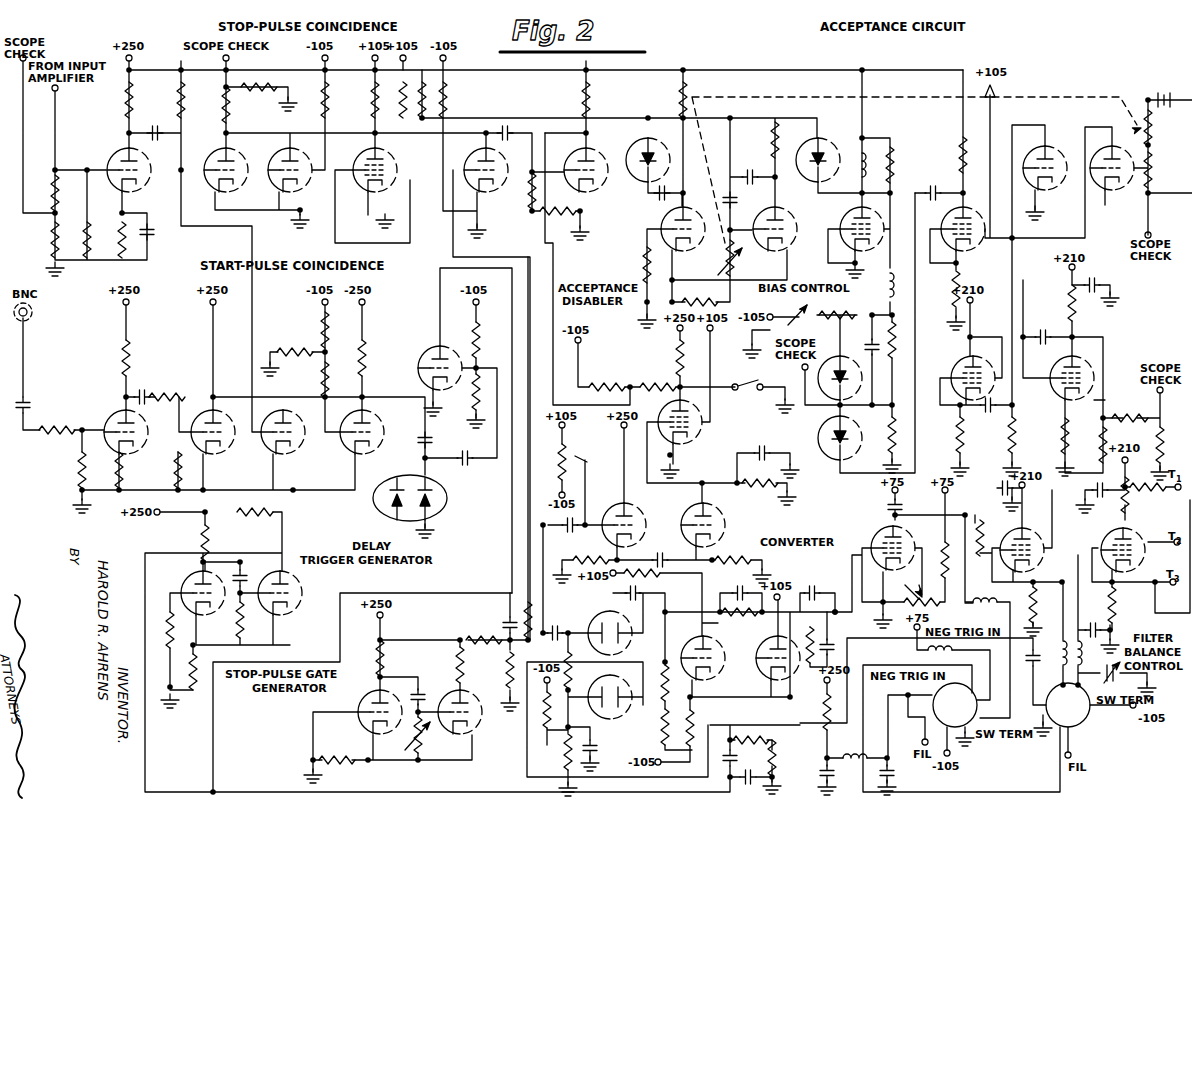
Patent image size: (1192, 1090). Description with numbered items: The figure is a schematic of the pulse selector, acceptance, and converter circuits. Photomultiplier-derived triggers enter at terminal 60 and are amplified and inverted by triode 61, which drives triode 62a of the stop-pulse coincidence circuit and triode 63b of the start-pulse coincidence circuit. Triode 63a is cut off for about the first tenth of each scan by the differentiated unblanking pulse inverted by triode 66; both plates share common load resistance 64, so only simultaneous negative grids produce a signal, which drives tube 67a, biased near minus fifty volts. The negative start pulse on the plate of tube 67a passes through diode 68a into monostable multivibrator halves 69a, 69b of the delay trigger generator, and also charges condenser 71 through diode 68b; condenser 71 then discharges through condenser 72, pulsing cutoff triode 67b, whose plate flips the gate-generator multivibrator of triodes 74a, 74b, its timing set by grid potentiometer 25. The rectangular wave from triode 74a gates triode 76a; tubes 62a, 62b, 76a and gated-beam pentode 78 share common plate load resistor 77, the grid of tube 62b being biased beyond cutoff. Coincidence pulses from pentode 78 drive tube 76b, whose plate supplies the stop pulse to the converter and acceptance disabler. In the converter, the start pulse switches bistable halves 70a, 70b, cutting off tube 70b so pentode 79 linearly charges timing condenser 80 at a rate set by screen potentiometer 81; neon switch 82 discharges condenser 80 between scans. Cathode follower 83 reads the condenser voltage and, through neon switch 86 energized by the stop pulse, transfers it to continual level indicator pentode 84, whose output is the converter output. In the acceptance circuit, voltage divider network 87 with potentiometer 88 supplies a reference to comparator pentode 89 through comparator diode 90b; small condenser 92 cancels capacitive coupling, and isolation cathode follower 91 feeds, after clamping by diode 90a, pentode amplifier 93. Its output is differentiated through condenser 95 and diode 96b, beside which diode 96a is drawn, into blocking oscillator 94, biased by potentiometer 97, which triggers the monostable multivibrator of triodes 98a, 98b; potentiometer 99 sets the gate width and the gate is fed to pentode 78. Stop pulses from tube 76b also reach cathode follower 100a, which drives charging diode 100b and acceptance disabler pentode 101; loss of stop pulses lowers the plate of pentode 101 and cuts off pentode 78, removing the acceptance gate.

The terminal 60 is at (65, 91).
The triode tube 61 is at (114, 156).
The triode tube 62a is at (217, 166).
The triode tube 62b is at (281, 166).
The triode 63a is at (213, 445).
The triode tube 63b is at (282, 442).
The common load resistance 64 is at (310, 380).
The triode tube 66 is at (135, 429).
The tube 67a is at (349, 440).
The triode tube 67b is at (420, 360).
The dual diode tube 68a is at (394, 498).
The diode tube 68b is at (445, 500).
The monostable multivibrator tube 69a is at (193, 585).
The monostable multivibrator tube 69b is at (297, 593).
The bistable multivibrator tube 70a is at (713, 654).
The bistable multivibrator tube 70b is at (762, 665).
The condenser 71 is at (417, 433).
The condenser 72 is at (462, 448).
The stop-pulse gate generator tube 74a is at (364, 717).
The stop-pulse gate generator tube 74b is at (468, 703).
The variable resistor 25 is at (425, 736).
The triode tube 76a is at (478, 166).
The tube 76b is at (593, 162).
The common plate load resistor 77 is at (371, 98).
The pentode tube 78 is at (369, 166).
The pentode tube 79 is at (886, 545).
The timing condenser 80 is at (882, 504).
The potentiometer 81 is at (917, 592).
The neon switch circuit 82 is at (968, 714).
The cathode follower tube 83 is at (1024, 540).
The continual level indicator tube 84 is at (1135, 545).
The neon switch 86 is at (1081, 714).
The voltage divider network 87 is at (1153, 206).
The potentiometer 88 is at (1154, 149).
The comparator pentode tube 89 is at (1072, 388).
The diode tube 90a is at (1041, 160).
The comparator diode tube 90b is at (1112, 180).
The isolation cathode follower tube 91 is at (969, 369).
The condenser 92 is at (1041, 326).
The pentode amplifier tube 93 is at (953, 225).
The blocking oscillator tube 94 is at (855, 225).
The condenser 95 is at (931, 183).
The diode 96a is at (840, 360).
The diode tube 96b is at (823, 438).
The potentiometer 97 is at (825, 319).
The triode tube 98a is at (672, 227).
The triode tube 98b is at (778, 212).
The variable potentiometer 99 is at (739, 258).
The cathode follower tube 100a is at (616, 515).
The integrator tube 100b is at (691, 516).
The acceptance disabler tube 101 is at (694, 425).